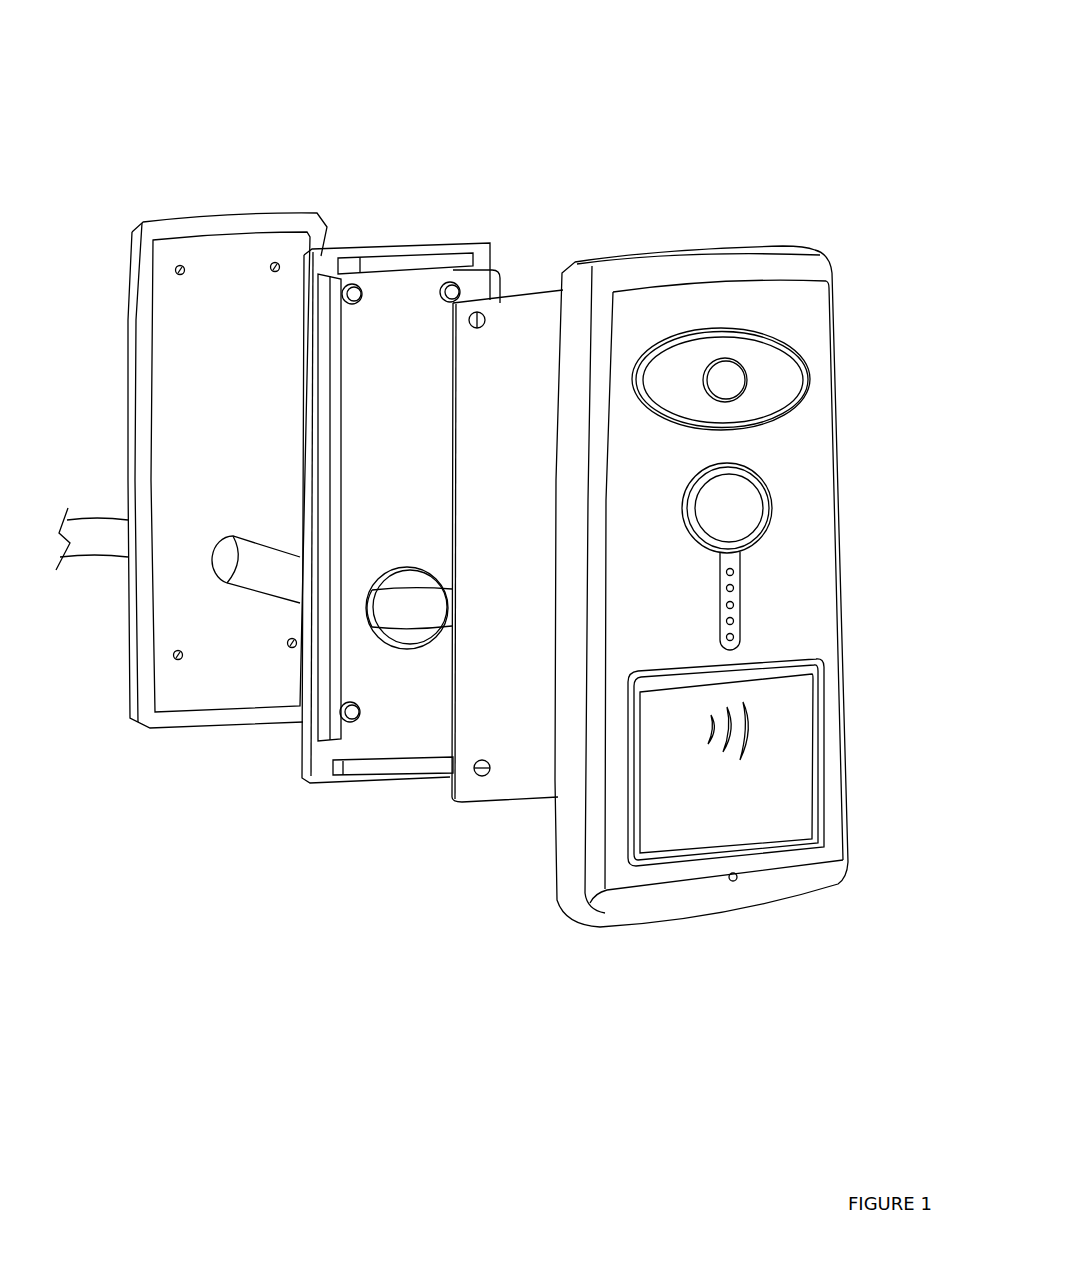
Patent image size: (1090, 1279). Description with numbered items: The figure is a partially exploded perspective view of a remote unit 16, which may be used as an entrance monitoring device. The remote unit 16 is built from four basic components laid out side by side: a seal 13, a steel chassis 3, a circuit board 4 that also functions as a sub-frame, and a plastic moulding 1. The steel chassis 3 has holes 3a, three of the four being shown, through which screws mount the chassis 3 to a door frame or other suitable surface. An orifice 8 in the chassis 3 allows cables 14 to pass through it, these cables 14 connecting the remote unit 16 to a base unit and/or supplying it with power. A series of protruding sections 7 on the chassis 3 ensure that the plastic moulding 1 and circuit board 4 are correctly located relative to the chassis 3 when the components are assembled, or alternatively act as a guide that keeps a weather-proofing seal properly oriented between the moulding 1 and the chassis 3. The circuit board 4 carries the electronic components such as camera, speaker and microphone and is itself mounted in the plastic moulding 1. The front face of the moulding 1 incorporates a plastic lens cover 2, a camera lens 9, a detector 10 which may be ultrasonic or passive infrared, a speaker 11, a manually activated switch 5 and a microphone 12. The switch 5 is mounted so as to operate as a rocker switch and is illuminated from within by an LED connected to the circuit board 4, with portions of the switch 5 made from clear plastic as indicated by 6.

The plastic moulding 1 is at (665, 274).
The plastic lens cover 2 is at (778, 385).
The steel chassis 3 is at (456, 243).
The holes 3a is at (350, 282).
The circuit board 4 is at (527, 298).
The manually activated switch 5 is at (757, 767).
The clear plastic portions 6 is at (703, 756).
The protruding sections 7 is at (405, 258).
The orifice 8 is at (413, 655).
The camera lens 9 is at (735, 374).
The detector 10 is at (733, 510).
The speaker 11 is at (740, 615).
The microphone 12 is at (733, 884).
The seal 13 is at (188, 222).
The cables 14 is at (233, 553).
The remote unit 16 is at (634, 930).